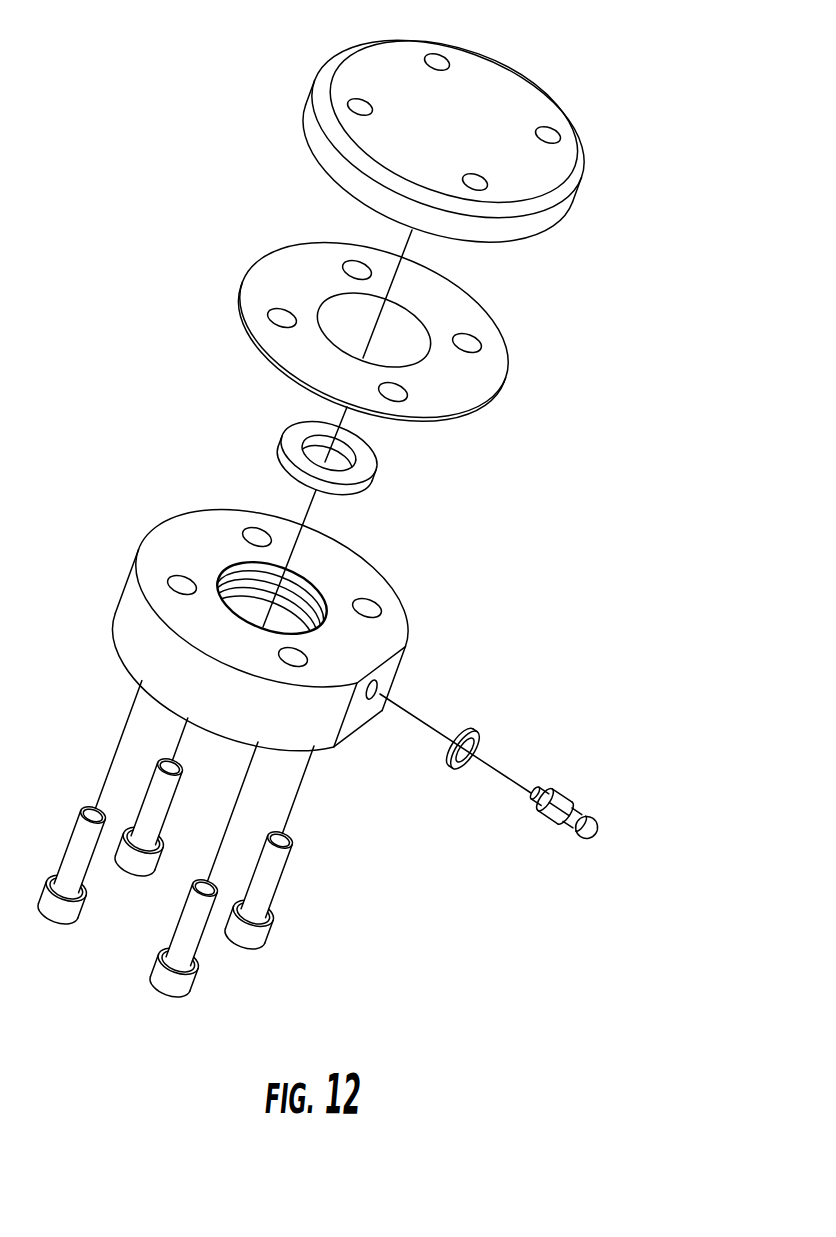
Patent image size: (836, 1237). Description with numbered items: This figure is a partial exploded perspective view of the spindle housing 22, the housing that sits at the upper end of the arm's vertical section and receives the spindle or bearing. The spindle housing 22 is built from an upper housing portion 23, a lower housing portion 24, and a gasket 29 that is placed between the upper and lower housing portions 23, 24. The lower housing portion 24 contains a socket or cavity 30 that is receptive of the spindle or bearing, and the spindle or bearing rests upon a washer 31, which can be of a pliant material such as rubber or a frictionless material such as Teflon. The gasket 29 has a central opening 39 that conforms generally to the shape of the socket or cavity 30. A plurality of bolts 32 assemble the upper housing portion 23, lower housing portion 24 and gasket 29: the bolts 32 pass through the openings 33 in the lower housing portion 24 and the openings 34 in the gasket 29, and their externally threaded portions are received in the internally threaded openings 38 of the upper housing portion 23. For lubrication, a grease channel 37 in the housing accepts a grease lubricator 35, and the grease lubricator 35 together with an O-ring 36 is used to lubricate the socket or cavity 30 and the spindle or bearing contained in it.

The spindle housing 22 is at (167, 105).
The upper housing portion 23 is at (314, 137).
The lower housing portion 24 is at (138, 589).
The gasket 29 is at (246, 327).
The socket or cavity 30 is at (306, 588).
The washer 31 is at (373, 485).
The bolts 32 is at (145, 867).
The openings 33 is at (182, 583).
The openings 34 is at (350, 271).
The grease lubricator 35 is at (547, 823).
The O-ring 36 is at (447, 758).
The grease channel 37 is at (378, 686).
The internally threaded openings 38 is at (360, 107).
The central opening 39 is at (401, 325).